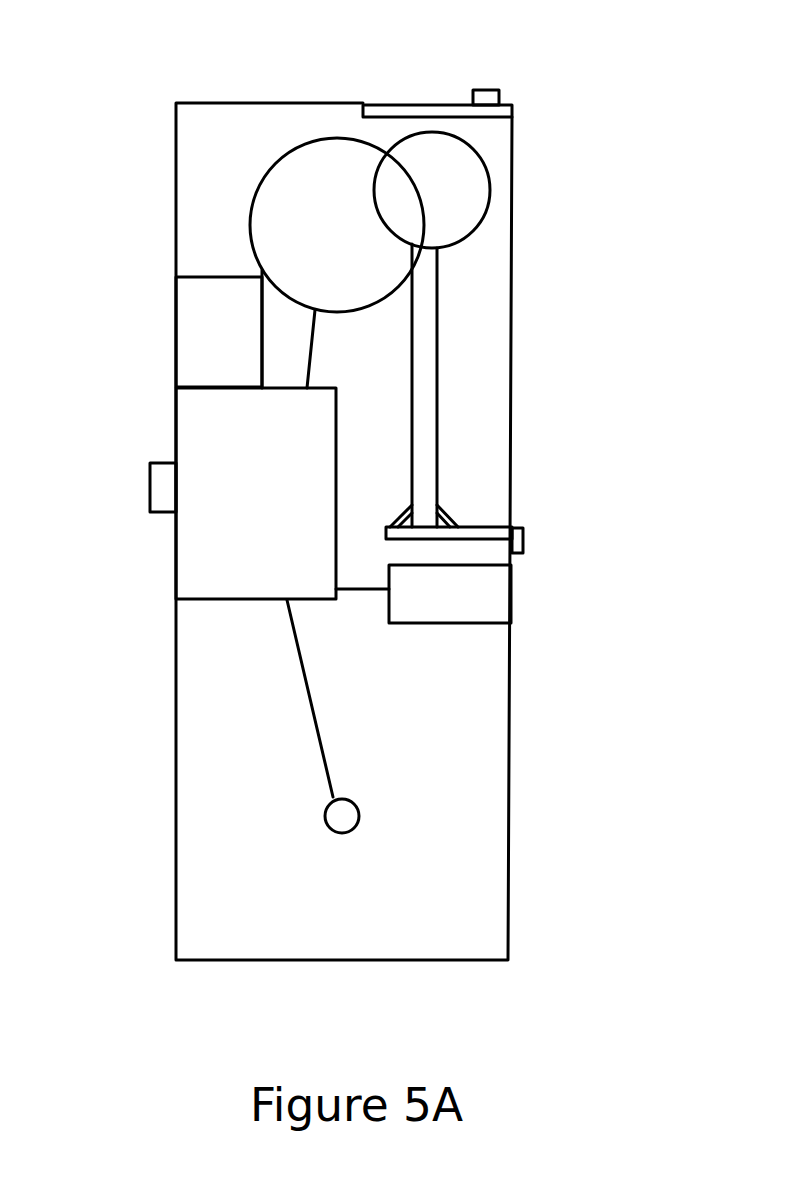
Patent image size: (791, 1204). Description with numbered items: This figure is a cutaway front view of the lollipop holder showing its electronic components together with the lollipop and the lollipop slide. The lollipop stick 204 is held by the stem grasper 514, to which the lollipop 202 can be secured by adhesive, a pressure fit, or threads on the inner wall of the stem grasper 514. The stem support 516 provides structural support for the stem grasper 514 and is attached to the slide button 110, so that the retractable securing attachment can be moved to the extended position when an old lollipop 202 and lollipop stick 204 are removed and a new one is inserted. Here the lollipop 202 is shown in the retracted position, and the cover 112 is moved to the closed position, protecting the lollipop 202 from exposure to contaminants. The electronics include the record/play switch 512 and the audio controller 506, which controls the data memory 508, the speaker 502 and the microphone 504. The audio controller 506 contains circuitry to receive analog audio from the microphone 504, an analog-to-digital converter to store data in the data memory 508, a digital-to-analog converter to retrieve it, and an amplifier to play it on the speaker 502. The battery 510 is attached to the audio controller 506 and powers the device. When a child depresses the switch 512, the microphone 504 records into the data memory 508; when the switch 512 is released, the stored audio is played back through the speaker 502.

The slide button 110 is at (522, 527).
The cover 112 is at (402, 112).
The lollipop 202 is at (461, 203).
The lollipop stick 204 is at (423, 414).
The speaker 502 is at (275, 226).
The microphone 504 is at (336, 823).
The audio controller 506 is at (313, 437).
The data memory 508 is at (215, 350).
The battery 510 is at (473, 601).
The record/play switch 512 is at (148, 499).
The stem grasper 514 is at (438, 522).
The stem support 516 is at (480, 530).